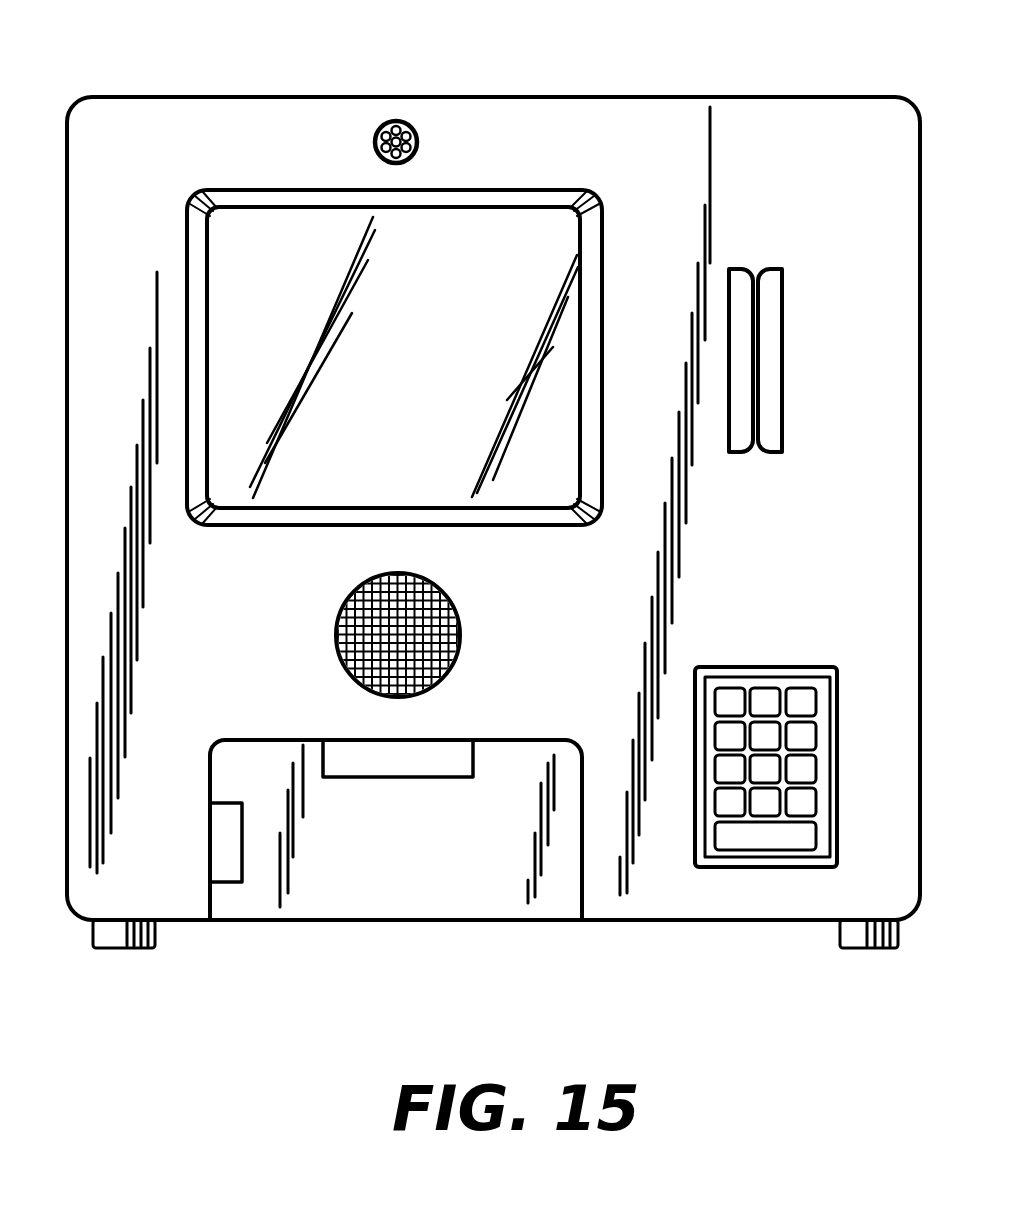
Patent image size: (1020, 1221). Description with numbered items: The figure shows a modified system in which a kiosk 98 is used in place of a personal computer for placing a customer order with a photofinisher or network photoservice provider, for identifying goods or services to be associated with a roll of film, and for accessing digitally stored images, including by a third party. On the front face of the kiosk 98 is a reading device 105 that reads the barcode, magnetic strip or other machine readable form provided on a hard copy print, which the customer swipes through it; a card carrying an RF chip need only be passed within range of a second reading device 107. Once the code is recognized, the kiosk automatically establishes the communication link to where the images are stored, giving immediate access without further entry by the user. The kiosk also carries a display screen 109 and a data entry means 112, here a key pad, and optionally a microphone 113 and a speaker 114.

The kiosk 98 is at (774, 86).
The reading device 105 is at (780, 270).
The second reading device 107 is at (438, 778).
The display screen 109 is at (500, 217).
The data entry means 112 is at (762, 666).
The microphone 113 is at (402, 119).
The speaker 114 is at (464, 614).